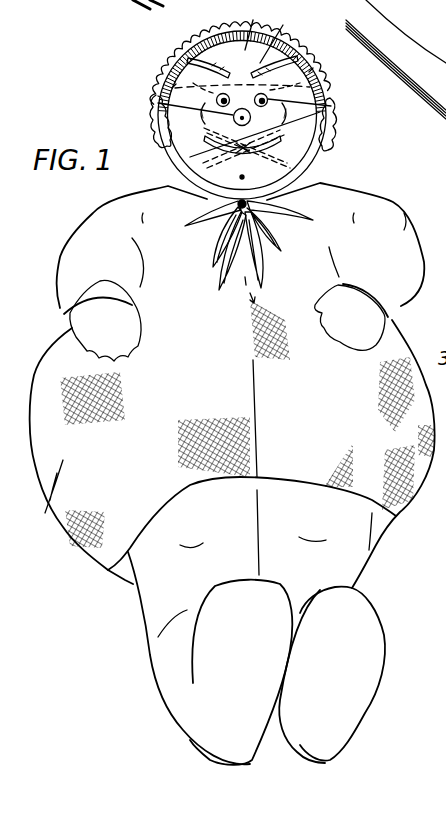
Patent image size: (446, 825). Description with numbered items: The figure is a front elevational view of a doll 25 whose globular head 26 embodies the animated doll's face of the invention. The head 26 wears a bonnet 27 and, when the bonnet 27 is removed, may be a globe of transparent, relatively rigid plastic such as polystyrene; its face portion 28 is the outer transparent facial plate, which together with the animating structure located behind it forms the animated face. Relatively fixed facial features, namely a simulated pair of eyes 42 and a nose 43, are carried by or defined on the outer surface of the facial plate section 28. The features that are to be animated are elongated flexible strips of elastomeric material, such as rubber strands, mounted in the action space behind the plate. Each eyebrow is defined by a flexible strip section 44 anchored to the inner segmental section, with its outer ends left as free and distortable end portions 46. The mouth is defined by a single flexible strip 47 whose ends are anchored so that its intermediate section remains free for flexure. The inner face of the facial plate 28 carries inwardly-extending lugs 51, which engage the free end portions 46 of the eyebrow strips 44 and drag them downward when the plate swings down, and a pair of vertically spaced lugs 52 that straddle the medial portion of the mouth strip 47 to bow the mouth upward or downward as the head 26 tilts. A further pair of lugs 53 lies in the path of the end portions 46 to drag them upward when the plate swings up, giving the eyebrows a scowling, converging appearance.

The doll 25 is at (332, 173).
The head 26 is at (122, 108).
The bonnet 27 is at (222, 27).
The face portion 28 is at (262, 27).
The eyes 42 is at (152, 109).
The nose 43 is at (331, 106).
The flexible strip section 44 is at (196, 37).
The free end portions 46 is at (164, 72).
The flexible strip 47 is at (190, 157).
The lugs 51 is at (176, 56).
The lugs 52 is at (322, 131).
The lugs 53 is at (158, 90).